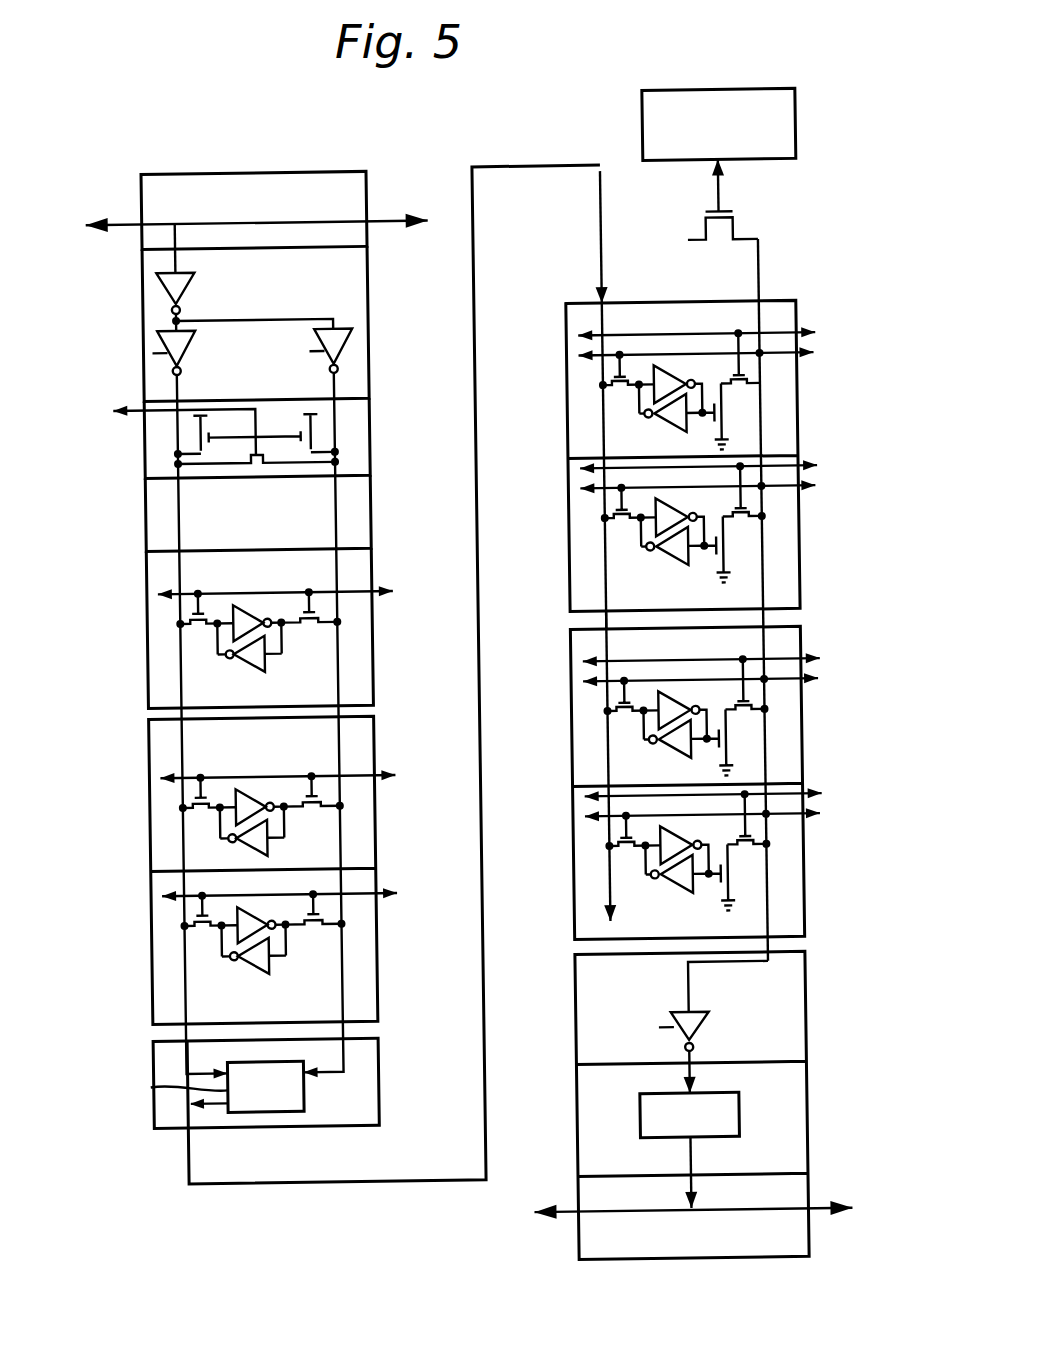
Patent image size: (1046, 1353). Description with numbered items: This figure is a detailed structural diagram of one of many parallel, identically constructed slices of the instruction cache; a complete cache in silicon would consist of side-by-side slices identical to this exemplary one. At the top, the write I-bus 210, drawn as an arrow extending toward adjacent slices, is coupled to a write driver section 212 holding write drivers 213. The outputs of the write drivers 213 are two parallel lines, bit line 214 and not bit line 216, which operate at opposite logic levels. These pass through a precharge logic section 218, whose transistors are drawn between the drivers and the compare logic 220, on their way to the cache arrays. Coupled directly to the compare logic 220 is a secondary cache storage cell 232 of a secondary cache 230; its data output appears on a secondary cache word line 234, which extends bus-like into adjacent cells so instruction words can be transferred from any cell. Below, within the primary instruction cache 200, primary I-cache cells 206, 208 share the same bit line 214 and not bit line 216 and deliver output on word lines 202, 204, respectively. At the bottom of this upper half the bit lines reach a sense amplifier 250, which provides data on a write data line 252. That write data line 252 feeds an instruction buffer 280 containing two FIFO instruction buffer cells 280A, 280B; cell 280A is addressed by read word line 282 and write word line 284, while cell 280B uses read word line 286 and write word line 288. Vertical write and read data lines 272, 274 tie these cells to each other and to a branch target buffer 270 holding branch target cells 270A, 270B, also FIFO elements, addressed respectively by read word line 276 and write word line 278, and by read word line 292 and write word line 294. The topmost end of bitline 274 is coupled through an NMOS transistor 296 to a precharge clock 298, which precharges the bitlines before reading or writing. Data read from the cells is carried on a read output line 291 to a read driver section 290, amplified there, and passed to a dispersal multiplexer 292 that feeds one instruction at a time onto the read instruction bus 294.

The write I-bus 210 is at (383, 221).
The write driver section 212 is at (355, 270).
The write drivers 213 is at (162, 340).
The bit line 214 is at (170, 384).
The not bit line 216 is at (345, 388).
The precharge/equalize transistors 218 is at (138, 429).
The compare logic 220 is at (355, 518).
The secondary cache 230 is at (380, 633).
The secondary cache storage cell 232 is at (217, 619).
The secondary cache word line 234 is at (218, 580).
The primary instruction cache 200 is at (382, 831).
The word line 202 is at (220, 757).
The word line 204 is at (220, 882).
The primary I-cache cell 206 is at (219, 794).
The primary I-cache cell 208 is at (220, 919).
The sense amplifier 250 is at (291, 1091).
The write data line 252 is at (175, 1157).
The precharge clock 298 is at (643, 118).
The NMOS transistor 296 is at (703, 232).
The read data line 274 is at (764, 617).
The read word line 282 is at (600, 330).
The write data line 272 is at (602, 615).
The instruction buffer 280 is at (805, 389).
The instruction buffer cell 280A is at (740, 352).
The instruction buffer cell 280B is at (740, 507).
The write word line 284 is at (730, 334).
The read word line 286 is at (733, 451).
The write word line 288 is at (733, 504).
The branch target buffer 270 is at (805, 739).
The branch target cell 270A is at (743, 709).
The branch target cell 270B is at (786, 888).
The read word line 276 is at (734, 649).
The write word line 278 is at (735, 692).
The dispersal multiplexer 292 is at (797, 795).
The read instruction bus 294 is at (797, 818).
The read driver section 290 is at (783, 978).
The read output line 291 is at (760, 962).